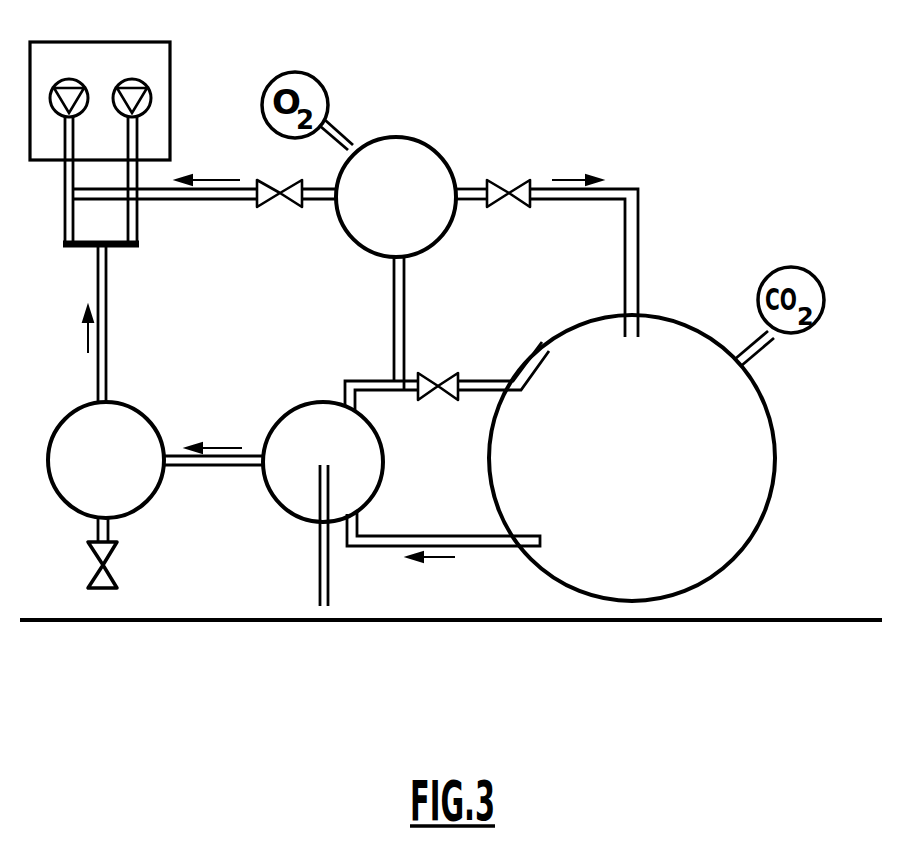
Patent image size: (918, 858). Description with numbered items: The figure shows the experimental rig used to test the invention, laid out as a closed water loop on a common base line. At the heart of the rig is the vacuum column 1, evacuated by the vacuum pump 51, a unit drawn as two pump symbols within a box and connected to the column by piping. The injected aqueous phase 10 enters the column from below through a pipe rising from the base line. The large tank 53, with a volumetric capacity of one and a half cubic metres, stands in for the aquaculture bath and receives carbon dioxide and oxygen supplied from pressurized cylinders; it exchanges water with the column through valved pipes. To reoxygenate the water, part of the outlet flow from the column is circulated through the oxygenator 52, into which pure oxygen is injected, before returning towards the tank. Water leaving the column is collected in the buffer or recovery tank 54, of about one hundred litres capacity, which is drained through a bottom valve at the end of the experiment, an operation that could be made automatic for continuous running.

The vacuum column 1 is at (303, 446).
The injected aqueous phase 10 is at (327, 605).
The vacuum pump 51 is at (157, 70).
The oxygenator 52 is at (412, 150).
The tank equivalent to the aquaculture bath 53 is at (720, 517).
The buffer or recovery tank 54 is at (120, 427).